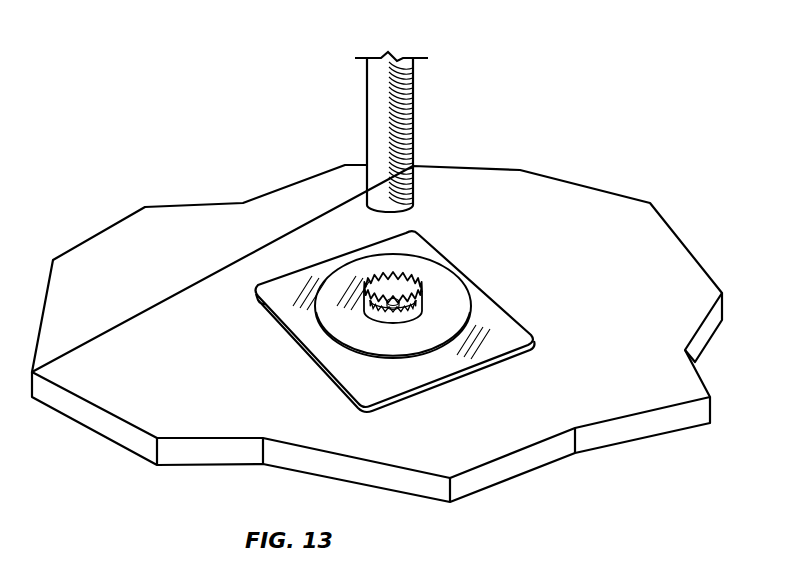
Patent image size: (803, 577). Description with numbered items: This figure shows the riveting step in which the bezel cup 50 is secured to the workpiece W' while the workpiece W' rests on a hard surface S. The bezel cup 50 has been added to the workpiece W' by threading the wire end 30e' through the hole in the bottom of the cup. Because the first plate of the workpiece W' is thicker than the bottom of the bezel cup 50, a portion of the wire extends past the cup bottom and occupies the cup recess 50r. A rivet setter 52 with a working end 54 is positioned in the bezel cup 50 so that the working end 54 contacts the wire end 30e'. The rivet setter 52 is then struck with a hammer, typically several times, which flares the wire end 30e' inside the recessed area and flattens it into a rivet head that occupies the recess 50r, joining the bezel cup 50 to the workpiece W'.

The hard surface S is at (149, 322).
The workpiece W' is at (395, 313).
The bezel cup 50 is at (424, 301).
The cup recess 50r is at (412, 299).
The wire end 30e' is at (424, 255).
The rivet setter 52 is at (367, 97).
The working end 54 is at (383, 213).